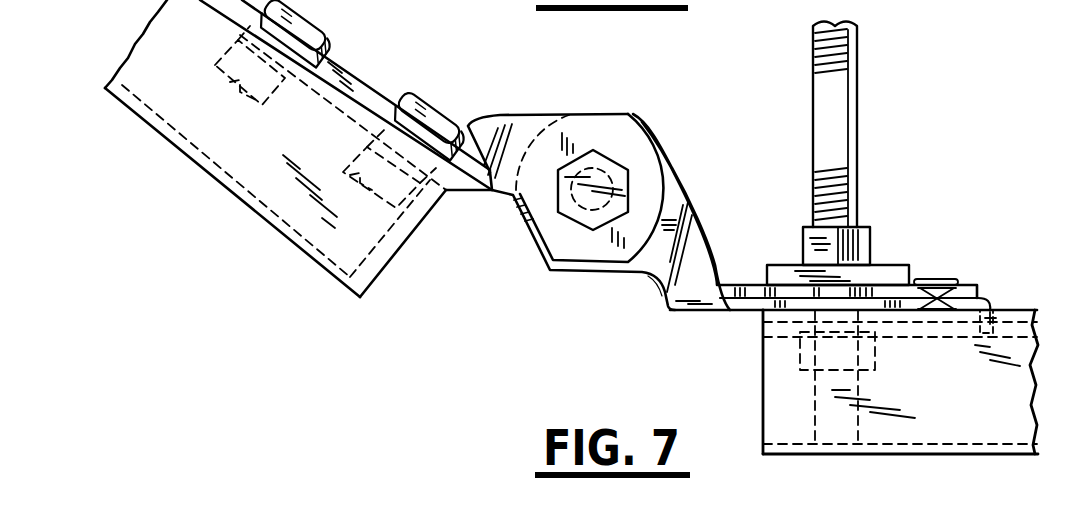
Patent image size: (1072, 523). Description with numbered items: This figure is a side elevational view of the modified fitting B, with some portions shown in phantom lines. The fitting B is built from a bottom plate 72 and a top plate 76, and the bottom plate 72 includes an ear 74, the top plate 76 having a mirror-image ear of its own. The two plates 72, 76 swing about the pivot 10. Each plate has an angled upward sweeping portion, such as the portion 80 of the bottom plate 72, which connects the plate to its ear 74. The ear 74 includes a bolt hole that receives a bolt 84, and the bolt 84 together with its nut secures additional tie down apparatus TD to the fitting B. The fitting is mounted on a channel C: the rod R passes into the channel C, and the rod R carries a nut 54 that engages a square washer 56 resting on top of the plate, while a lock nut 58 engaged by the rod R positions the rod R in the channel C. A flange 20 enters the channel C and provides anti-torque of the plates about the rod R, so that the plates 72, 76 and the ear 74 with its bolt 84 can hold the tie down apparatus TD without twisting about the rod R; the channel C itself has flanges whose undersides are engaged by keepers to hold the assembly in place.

The tie down apparatus TD is at (358, 62).
The fitting B is at (752, 218).
The ear 74 is at (660, 146).
The bolt 84 is at (580, 212).
The top plate 76 is at (748, 280).
The angled upward sweeping portion 80 is at (670, 294).
The bottom plate 72 is at (742, 312).
The rod R is at (869, 85).
The nut 54 is at (866, 236).
The square washer 56 is at (895, 266).
The pivot 10 is at (945, 279).
The flange 20 is at (994, 332).
The channel C is at (882, 349).
The lock nut 58 is at (800, 362).